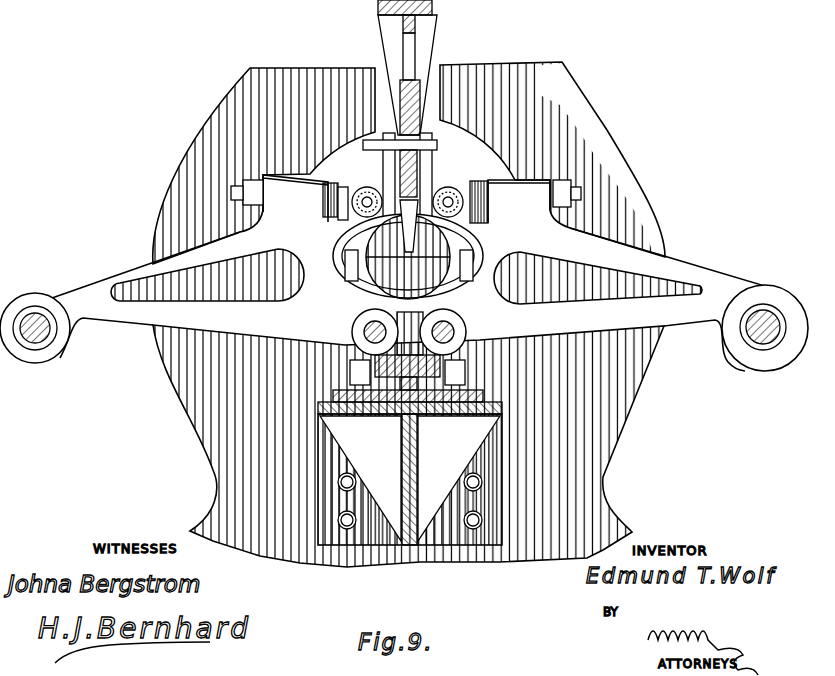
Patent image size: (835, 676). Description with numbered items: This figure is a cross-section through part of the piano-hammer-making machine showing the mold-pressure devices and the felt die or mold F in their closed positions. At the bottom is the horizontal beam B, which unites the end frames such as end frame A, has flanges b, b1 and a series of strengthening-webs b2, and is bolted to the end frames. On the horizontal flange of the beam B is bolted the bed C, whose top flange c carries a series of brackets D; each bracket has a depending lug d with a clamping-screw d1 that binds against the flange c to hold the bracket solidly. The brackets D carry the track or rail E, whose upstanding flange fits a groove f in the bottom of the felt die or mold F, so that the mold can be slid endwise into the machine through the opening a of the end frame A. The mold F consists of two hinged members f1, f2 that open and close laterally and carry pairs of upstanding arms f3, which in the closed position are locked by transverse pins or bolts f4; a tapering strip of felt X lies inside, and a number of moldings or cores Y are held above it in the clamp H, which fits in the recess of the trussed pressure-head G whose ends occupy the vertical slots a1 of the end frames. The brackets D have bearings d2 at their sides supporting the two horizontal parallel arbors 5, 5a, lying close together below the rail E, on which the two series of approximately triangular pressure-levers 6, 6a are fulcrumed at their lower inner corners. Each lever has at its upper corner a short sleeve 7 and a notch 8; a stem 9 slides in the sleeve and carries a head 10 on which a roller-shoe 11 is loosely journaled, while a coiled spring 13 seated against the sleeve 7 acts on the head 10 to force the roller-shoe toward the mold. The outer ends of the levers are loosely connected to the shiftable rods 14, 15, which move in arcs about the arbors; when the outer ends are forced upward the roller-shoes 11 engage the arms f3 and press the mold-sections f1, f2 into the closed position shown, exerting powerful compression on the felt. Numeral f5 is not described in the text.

The end frame A is at (200, 400).
The pressure-lever 6 is at (150, 315).
The pressure-lever 6a is at (697, 310).
The shiftable rod 14 is at (33, 340).
The shiftable rod 15 is at (763, 343).
The pressure-head G is at (433, 8).
The vertical slot a1 is at (440, 80).
The clamp H is at (408, 175).
The pin or bolt f4 is at (400, 124).
The roller-shoe 11 is at (411, 192).
The molding or core Y is at (440, 175).
The rod cross bar f5 is at (432, 168).
The upstanding arm f3 is at (383, 170).
The coiled spring 13 is at (421, 190).
The sleeve 7 is at (287, 185).
The head 10 is at (513, 171).
The opening a is at (472, 182).
The stem 9 is at (232, 192).
The notch 8 is at (335, 222).
The track or rail E is at (455, 300).
The felt die or mold F is at (470, 248).
The mold member f1 is at (397, 226).
The mold member f2 is at (432, 244).
The strip of felt X is at (389, 272).
The groove f is at (453, 275).
The bracket D is at (410, 333).
The bearing d2 is at (378, 317).
The arbor 5 is at (372, 332).
The arbor 5a is at (460, 332).
The bed C is at (342, 387).
The top flange c is at (407, 377).
The clamping-screw d1 is at (473, 357).
The depending lug d is at (467, 370).
The flange b1 is at (497, 400).
The beam B is at (405, 470).
The flange b is at (431, 498).
The strengthening-web b2 is at (467, 452).